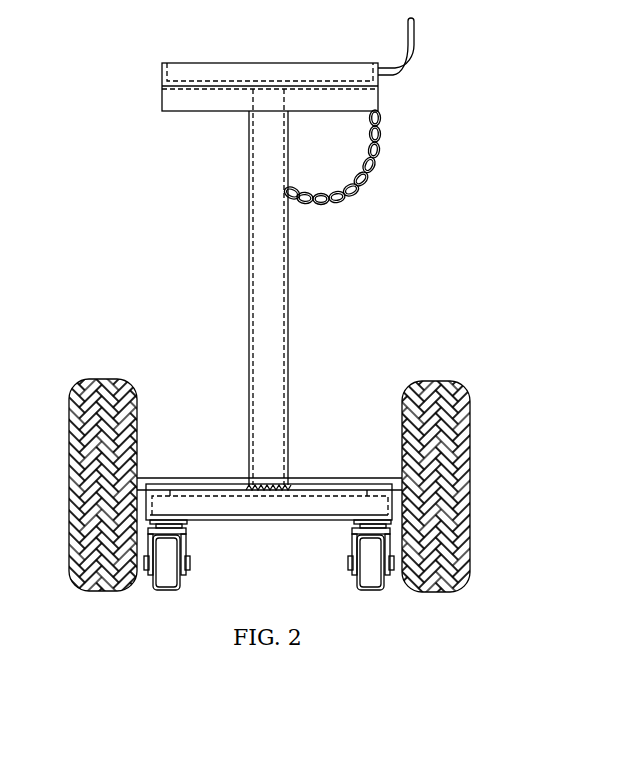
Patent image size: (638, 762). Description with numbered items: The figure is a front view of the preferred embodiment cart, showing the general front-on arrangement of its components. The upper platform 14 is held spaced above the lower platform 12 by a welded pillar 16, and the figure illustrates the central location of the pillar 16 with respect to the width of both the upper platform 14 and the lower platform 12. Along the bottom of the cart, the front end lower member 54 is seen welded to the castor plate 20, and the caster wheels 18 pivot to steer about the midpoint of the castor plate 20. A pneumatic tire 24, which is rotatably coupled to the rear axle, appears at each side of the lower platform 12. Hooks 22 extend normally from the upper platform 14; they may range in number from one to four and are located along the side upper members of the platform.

The lower platform 12 is at (213, 478).
The upper platform 14 is at (162, 86).
The pillar 16 is at (288, 318).
The caster wheels 18 is at (377, 587).
The castor plate 20 is at (352, 520).
The hooks 22 is at (415, 33).
The pneumatic tire 24 is at (461, 387).
The front end lower member 54 is at (243, 510).